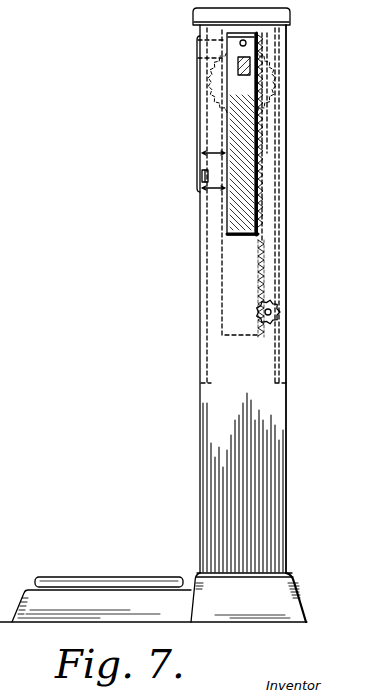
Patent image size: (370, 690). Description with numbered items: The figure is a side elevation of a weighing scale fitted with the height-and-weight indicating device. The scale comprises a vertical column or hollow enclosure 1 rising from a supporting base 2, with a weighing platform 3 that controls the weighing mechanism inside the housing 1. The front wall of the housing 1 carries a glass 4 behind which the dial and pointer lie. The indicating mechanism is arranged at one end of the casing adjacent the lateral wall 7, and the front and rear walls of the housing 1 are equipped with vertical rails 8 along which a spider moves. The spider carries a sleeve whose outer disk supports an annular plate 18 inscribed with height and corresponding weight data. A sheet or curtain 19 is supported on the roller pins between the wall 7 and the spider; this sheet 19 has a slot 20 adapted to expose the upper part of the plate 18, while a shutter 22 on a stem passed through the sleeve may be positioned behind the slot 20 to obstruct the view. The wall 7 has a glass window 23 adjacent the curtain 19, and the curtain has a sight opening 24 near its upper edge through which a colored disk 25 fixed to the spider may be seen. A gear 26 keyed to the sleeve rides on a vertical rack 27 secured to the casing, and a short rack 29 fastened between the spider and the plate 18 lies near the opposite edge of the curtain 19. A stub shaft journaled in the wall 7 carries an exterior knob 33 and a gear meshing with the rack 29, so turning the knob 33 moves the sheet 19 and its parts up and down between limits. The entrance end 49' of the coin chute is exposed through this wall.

The vertical column 1 is at (286, 478).
The supporting base 2 is at (40, 607).
The weighing platform 3 is at (100, 577).
The glass 4 is at (195, 122).
The lateral wall 7 is at (250, 413).
The vertical rails 8 is at (207, 323).
The annular plate 18 is at (193, 77).
The sheet or curtain 19 is at (220, 283).
The slot 20 is at (250, 60).
The shutter 22 is at (276, 90).
The glass window 23 is at (240, 218).
The sight opening 24 is at (248, 45).
The colored disk 25 is at (222, 43).
The gear 26 is at (218, 92).
The vertical rack 27 is at (268, 140).
The short rack 29 is at (266, 250).
The exterior knob 33 is at (281, 312).
The entrance end 49' is at (178, 181).